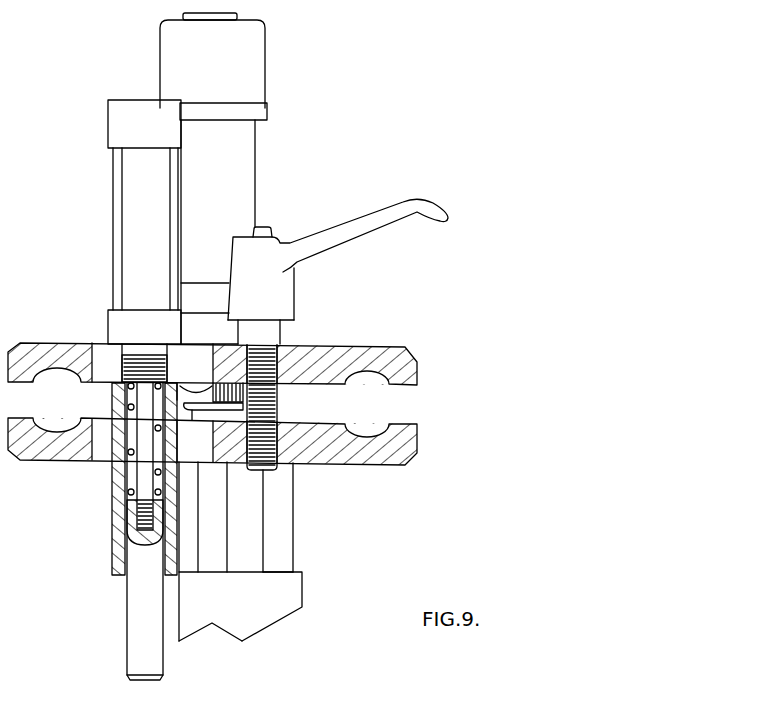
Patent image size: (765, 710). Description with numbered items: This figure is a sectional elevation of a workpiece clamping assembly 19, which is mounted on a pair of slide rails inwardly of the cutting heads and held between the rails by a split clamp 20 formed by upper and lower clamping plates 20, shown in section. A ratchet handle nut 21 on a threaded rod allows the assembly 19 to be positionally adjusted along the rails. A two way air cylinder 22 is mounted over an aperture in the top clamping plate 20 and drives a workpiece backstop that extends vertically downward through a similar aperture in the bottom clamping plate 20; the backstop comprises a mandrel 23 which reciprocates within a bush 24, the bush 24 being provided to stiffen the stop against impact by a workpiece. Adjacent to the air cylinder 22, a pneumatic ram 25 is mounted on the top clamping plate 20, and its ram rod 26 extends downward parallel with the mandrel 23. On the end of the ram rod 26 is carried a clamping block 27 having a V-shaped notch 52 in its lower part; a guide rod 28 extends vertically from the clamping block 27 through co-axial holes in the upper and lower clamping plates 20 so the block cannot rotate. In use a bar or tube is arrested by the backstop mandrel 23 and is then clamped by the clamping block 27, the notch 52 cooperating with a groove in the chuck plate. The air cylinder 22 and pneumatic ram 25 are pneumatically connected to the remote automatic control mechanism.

The workpiece clamping assembly 19 is at (397, 304).
The split clamp / clamping plates 20 is at (402, 370).
The ratchet handle nut 21 is at (328, 235).
The two way air cylinder 22 is at (130, 229).
The mandrel 23 is at (133, 657).
The bush 24 is at (117, 492).
The pneumatic ram 25 is at (246, 147).
The ram rod 26 is at (218, 522).
The clamping block 27 is at (275, 612).
The guide rod 28 is at (285, 540).
The V-shaped notch 52 is at (222, 633).